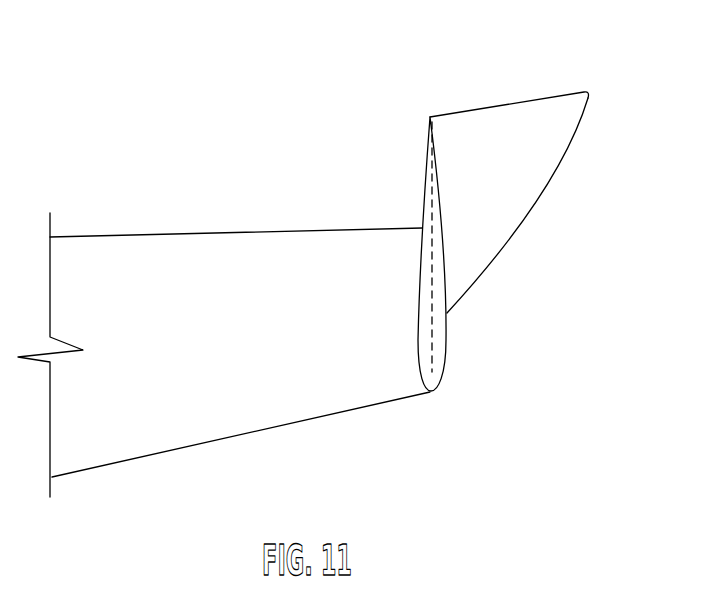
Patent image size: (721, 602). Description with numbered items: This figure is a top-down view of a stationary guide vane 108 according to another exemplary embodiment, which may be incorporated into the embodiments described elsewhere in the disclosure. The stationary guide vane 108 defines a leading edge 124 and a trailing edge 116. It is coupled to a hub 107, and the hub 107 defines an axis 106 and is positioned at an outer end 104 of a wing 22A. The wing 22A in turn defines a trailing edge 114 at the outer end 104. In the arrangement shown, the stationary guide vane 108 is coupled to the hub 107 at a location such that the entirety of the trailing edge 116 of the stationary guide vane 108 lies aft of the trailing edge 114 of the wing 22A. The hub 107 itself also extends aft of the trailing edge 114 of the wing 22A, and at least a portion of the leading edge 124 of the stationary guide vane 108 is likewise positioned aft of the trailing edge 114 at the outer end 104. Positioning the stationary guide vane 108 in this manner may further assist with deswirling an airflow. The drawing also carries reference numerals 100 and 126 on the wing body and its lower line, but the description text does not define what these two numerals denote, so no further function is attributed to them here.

The wing 22A is at (224, 318).
The wing 100 is at (195, 425).
The outer end 104 is at (389, 382).
The axis 106 is at (420, 176).
The hub 107 is at (447, 269).
The stationary guide vane 108 is at (509, 175).
The trailing edge of the wing 114 is at (180, 228).
The trailing edge of the stationary guide vane 116 is at (518, 101).
The leading edge of the stationary guide vane 124 is at (492, 262).
The wing root portion 126 is at (278, 441).